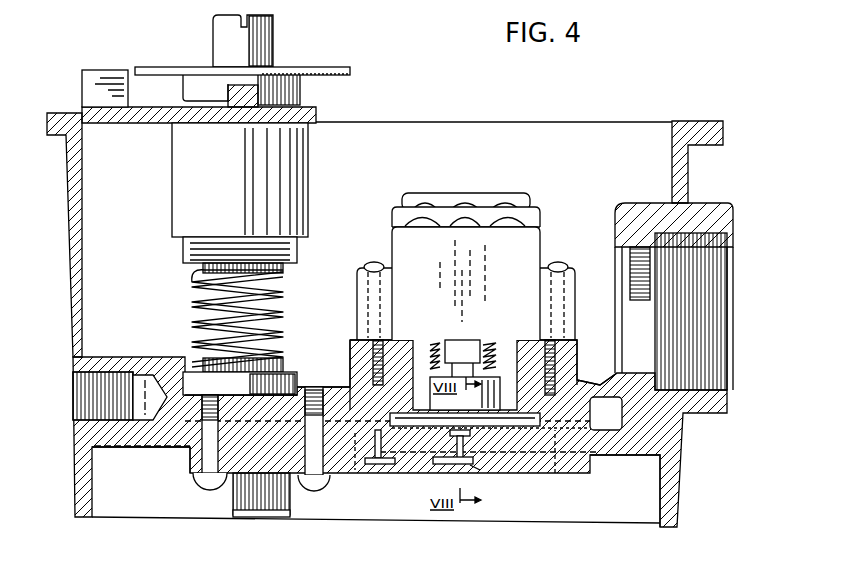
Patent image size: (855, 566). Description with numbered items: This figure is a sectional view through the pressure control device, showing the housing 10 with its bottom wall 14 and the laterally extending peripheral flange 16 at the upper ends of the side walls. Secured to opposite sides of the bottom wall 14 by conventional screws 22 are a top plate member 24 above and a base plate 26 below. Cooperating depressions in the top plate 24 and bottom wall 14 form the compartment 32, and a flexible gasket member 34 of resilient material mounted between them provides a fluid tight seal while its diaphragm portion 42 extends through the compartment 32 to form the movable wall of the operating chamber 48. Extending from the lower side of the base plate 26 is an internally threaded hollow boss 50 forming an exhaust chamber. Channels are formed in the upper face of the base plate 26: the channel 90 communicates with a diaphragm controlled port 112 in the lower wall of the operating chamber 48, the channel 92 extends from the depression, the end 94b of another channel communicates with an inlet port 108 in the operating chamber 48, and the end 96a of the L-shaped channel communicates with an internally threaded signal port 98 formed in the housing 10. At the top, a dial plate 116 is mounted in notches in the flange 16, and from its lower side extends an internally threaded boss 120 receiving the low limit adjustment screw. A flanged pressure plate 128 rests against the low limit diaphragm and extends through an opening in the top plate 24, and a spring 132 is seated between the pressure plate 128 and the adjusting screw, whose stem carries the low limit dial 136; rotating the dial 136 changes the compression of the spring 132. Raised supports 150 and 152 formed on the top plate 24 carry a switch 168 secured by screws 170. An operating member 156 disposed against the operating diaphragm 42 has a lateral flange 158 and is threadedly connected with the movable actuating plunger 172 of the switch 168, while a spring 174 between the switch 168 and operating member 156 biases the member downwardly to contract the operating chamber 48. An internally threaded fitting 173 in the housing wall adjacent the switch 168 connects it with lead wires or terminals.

The housing 10 is at (63, 239).
The bottom wall 14 is at (643, 459).
The peripheral flange 16 is at (682, 125).
The screws 22 is at (316, 395).
The top plate member 24 is at (290, 395).
The base plate 26 is at (535, 481).
The compartment 32 is at (351, 398).
The flexible gasket member 34 is at (606, 413).
The diaphragm portion 42 is at (583, 399).
The operating chamber 48 is at (559, 474).
The internally threaded hollow boss 50 is at (205, 488).
The channel 90 is at (465, 475).
The channel 92 is at (282, 478).
The channel end 94b is at (380, 440).
The channel end 96a is at (122, 466).
The signal port 98 is at (92, 414).
The inlet port 108 is at (388, 452).
The diaphragm controlled port 112 is at (458, 458).
The dial plate 116 is at (308, 110).
The internally threaded boss 120 is at (310, 180).
The flanged pressure plate 128 is at (286, 372).
The spring 132 is at (200, 285).
The low limit dial 136 is at (182, 46).
The raised support 150 is at (357, 343).
The raised support 152 is at (571, 352).
The operating member 156 is at (465, 396).
The lateral flange 158 is at (545, 426).
The switch 168 is at (546, 220).
The screws 170 is at (557, 263).
The actuating plunger 172 is at (468, 362).
The internally threaded fitting 173 is at (710, 202).
The spring 174 is at (440, 342).